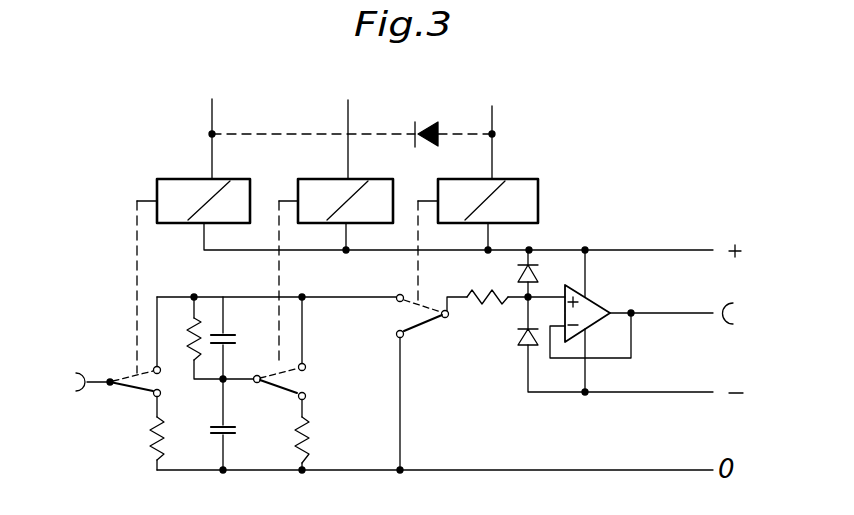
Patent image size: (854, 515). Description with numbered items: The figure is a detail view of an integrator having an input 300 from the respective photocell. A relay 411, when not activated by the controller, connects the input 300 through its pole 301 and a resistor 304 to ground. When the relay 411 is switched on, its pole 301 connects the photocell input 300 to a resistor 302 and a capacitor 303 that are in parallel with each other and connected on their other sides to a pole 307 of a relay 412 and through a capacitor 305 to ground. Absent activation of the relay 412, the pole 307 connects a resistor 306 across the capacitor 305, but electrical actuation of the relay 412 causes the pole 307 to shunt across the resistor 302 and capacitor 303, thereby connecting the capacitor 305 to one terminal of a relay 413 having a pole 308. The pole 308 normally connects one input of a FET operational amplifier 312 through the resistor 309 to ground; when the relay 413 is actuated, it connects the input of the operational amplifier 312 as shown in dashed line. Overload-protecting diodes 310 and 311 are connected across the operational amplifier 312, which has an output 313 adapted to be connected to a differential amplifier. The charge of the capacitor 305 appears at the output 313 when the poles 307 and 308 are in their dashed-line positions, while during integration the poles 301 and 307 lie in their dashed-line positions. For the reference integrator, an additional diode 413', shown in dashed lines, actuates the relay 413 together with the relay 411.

The input 300 is at (76, 391).
The pole 301 is at (134, 377).
The resistor 302 is at (187, 340).
The capacitor 303 is at (235, 313).
The resistor 304 is at (150, 428).
The capacitor 305 is at (213, 431).
The resistor 306 is at (307, 443).
The pole 307 is at (290, 386).
The pole 308 is at (407, 325).
The resistor 309 is at (491, 306).
The overload-protecting diode 310 is at (517, 276).
The overload-protecting diode 311 is at (524, 348).
The FET operational amplifier 312 is at (593, 326).
The output 313 is at (730, 302).
The relay 411 is at (197, 186).
The relay 412 is at (336, 186).
The relay 413 is at (488, 185).
The additional diode 413' is at (439, 114).